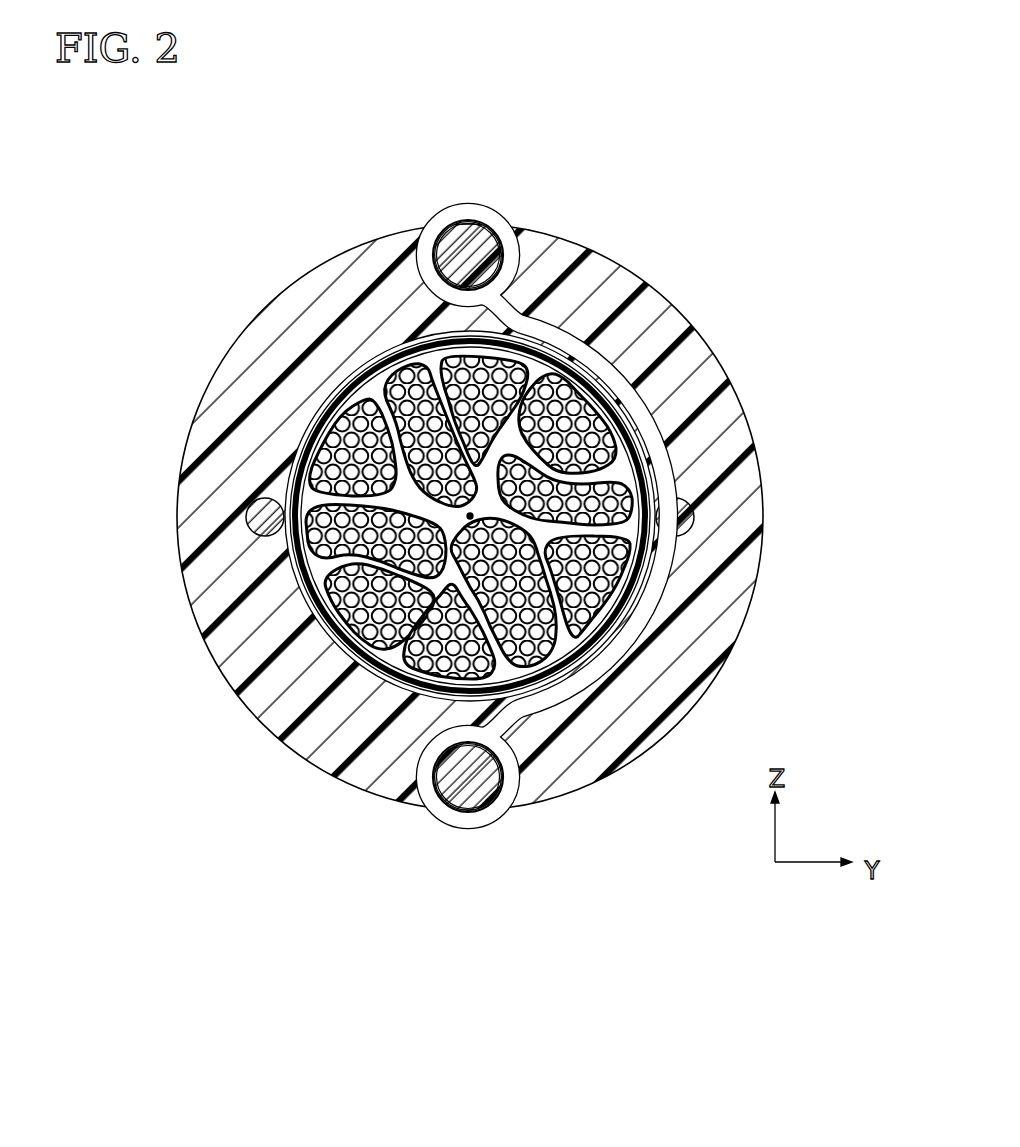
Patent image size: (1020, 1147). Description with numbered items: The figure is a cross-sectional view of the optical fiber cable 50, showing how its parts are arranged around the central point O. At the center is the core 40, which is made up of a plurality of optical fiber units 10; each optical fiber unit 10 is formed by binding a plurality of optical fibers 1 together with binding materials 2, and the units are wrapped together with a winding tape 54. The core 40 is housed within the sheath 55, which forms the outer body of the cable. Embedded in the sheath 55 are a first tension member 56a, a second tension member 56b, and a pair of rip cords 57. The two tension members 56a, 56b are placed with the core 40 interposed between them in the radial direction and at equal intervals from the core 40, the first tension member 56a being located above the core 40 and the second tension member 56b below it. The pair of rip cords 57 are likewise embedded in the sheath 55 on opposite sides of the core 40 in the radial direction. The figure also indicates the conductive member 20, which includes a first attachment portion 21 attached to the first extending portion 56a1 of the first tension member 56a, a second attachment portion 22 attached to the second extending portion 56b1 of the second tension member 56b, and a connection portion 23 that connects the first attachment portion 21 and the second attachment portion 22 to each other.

The optical fiber cable 50 is at (467, 521).
The sheath 55 is at (356, 282).
The first tension member 56a is at (487, 205).
The first extending portion 56a1 is at (463, 256).
The first attachment portion 21 is at (501, 214).
The conductive member 20 is at (594, 525).
The connection portion 23 is at (648, 413).
The rip cord 57 is at (690, 523).
The center O is at (470, 516).
The winding tape 54 is at (306, 567).
The core 40 is at (361, 683).
The second attachment portion 22 is at (452, 814).
The second tension member 56b is at (494, 839).
The second extending portion 56b1 is at (462, 782).
The binding material 2 is at (502, 624).
The optical fiber unit 10 is at (573, 661).
The optical fiber 1 is at (647, 550).